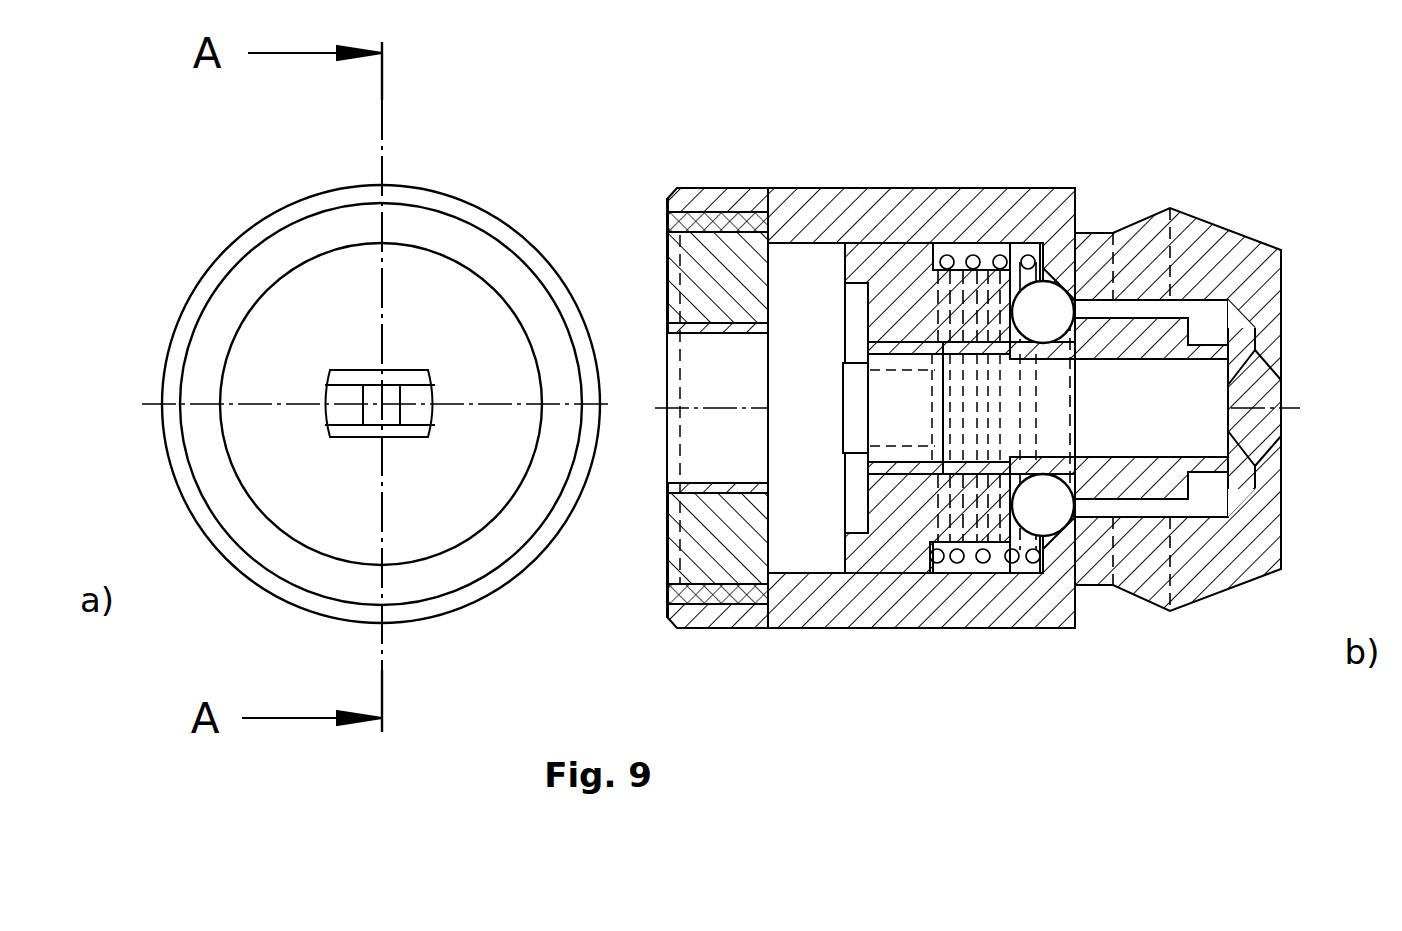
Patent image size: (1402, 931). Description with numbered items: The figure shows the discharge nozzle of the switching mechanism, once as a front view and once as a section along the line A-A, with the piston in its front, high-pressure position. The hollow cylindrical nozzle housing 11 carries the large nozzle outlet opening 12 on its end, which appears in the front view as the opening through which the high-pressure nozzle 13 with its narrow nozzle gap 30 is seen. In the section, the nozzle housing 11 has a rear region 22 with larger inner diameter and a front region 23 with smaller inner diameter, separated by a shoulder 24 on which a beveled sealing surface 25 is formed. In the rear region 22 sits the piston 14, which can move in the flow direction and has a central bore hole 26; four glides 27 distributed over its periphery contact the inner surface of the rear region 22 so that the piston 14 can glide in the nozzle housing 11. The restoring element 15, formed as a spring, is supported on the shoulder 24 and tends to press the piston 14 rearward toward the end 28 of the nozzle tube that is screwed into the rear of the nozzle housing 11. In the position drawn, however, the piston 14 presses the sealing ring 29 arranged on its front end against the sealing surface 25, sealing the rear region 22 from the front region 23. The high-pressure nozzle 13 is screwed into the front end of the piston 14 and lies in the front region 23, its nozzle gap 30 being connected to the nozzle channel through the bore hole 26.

The nozzle housing 11 is at (477, 247).
The nozzle outlet opening 12 is at (402, 372).
The high-pressure nozzle 13 is at (418, 414).
The piston 14 is at (907, 277).
The restoring element 15 is at (1003, 250).
The rear region 22 is at (818, 547).
The front region 23 is at (1200, 313).
The shoulder 24 is at (1060, 563).
The sealing surface 25 is at (1068, 288).
The bore hole 26 is at (893, 418).
The glides 27 is at (863, 270).
The end of the nozzle tube 28 is at (723, 270).
The sealing ring 29 is at (1027, 533).
The nozzle gap 30 is at (368, 407).